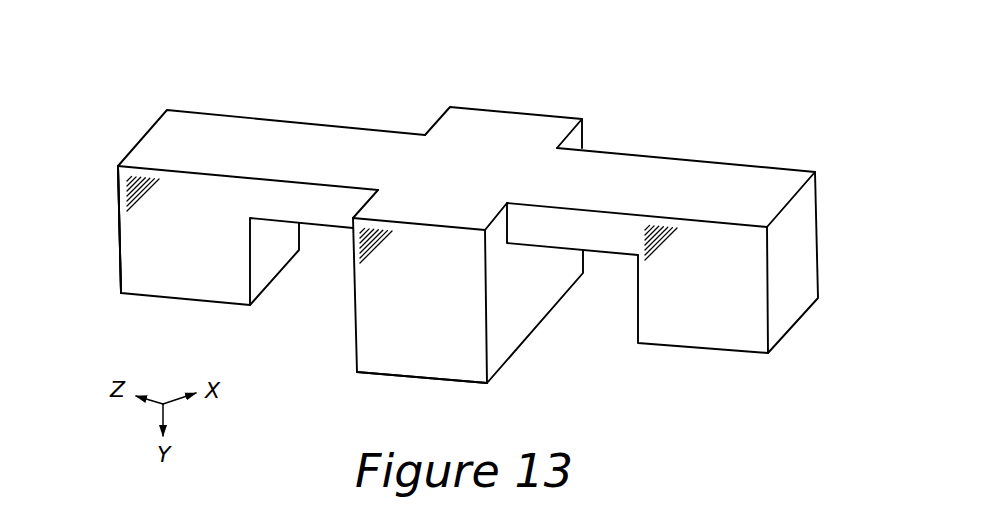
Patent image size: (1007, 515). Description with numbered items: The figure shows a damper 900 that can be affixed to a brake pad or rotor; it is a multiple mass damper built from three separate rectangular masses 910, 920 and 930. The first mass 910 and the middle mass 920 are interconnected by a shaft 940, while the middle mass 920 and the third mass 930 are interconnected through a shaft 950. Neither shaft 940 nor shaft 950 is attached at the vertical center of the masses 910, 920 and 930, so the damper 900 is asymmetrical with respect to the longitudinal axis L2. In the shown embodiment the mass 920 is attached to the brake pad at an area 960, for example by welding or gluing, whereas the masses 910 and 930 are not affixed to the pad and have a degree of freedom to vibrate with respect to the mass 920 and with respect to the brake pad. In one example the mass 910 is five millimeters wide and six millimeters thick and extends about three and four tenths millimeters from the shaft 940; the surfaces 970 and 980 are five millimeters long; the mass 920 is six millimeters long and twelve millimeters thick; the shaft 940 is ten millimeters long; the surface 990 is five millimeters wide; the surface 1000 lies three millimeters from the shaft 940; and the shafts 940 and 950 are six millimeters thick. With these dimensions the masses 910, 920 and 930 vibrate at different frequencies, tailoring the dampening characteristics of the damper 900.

The damper 900 is at (673, 107).
The mass 910 is at (180, 287).
The mass 920 is at (432, 362).
The mass 930 is at (732, 342).
The shaft 940 is at (283, 135).
The shaft 950 is at (670, 170).
The area 960 is at (380, 386).
The surface 970 is at (117, 254).
The surface 980 is at (808, 222).
The surface 990 is at (521, 110).
The surface 1000 is at (392, 168).
The longitudinal axis L2 is at (118, 206).